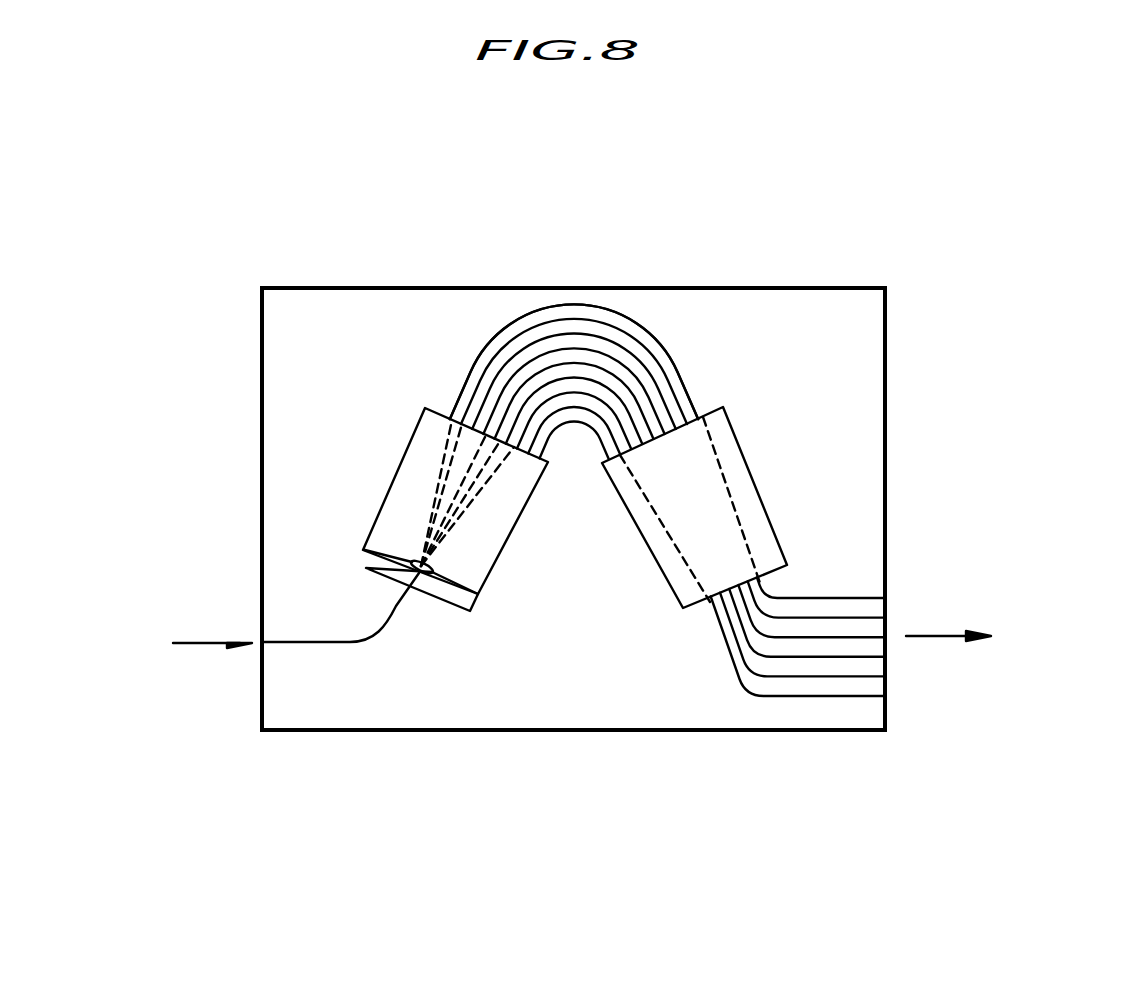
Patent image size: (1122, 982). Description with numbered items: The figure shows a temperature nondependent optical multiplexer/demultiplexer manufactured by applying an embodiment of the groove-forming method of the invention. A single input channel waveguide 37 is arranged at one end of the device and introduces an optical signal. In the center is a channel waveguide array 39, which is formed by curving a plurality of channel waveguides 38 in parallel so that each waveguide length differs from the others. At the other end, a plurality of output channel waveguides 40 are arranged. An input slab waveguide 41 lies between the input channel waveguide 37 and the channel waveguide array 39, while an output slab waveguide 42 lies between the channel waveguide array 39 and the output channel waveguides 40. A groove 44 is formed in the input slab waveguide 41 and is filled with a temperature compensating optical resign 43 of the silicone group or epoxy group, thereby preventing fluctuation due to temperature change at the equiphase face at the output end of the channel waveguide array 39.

The input channel waveguide 37 is at (328, 642).
The channel waveguide 38 is at (505, 329).
The channel waveguide array 39 is at (590, 432).
The output channel waveguides 40 is at (846, 586).
The input slab waveguide 41 is at (385, 502).
The output slab waveguide 42 is at (757, 490).
The temperature compensating optical resign 43 is at (365, 550).
The groove 44 is at (436, 572).